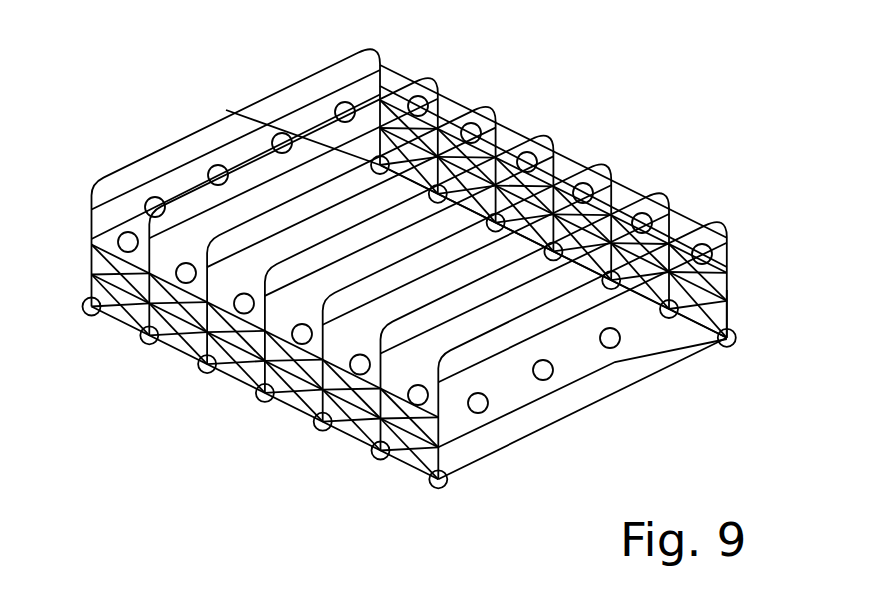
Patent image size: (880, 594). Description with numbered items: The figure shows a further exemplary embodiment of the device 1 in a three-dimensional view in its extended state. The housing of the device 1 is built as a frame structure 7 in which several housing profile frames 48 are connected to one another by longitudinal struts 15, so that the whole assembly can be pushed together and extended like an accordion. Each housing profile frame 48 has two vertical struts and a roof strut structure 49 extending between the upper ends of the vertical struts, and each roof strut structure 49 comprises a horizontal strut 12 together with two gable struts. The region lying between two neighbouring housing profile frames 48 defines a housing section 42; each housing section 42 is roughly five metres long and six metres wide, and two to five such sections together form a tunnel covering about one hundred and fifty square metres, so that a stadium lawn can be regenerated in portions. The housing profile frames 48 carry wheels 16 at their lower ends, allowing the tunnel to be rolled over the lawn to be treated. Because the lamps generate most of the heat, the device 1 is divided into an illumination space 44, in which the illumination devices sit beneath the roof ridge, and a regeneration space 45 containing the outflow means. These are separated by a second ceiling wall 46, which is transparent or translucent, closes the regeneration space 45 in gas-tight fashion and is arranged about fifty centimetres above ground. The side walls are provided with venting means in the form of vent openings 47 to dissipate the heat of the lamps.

The device 1 is at (680, 112).
The frame structure 7 is at (640, 297).
The horizontal strut 12 is at (192, 160).
The longitudinal struts 15 is at (298, 380).
The wheels 16 is at (90, 318).
The housing section 42 is at (410, 78).
The illumination space 44 is at (728, 300).
The regeneration space 45 is at (484, 472).
The second ceiling wall 46 is at (663, 343).
The vent openings 47 is at (548, 380).
The housing profile frames 48 is at (416, 406).
The roof strut structure 49 is at (682, 233).